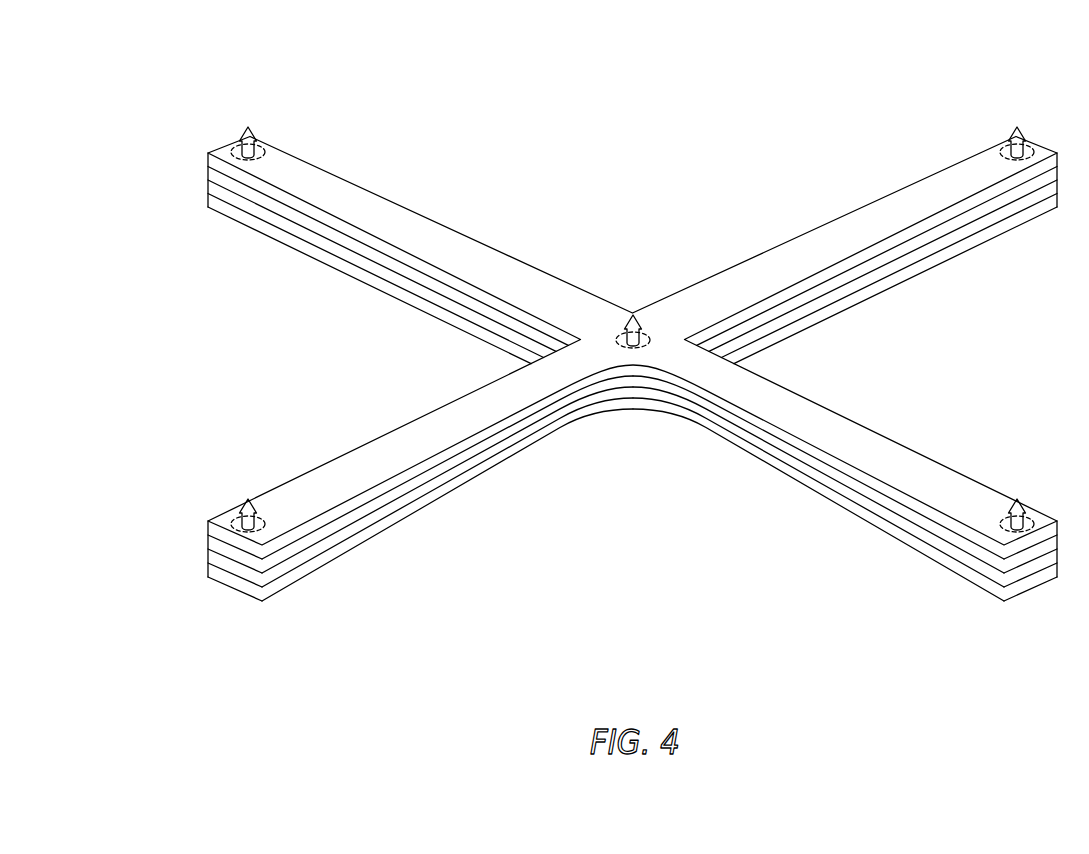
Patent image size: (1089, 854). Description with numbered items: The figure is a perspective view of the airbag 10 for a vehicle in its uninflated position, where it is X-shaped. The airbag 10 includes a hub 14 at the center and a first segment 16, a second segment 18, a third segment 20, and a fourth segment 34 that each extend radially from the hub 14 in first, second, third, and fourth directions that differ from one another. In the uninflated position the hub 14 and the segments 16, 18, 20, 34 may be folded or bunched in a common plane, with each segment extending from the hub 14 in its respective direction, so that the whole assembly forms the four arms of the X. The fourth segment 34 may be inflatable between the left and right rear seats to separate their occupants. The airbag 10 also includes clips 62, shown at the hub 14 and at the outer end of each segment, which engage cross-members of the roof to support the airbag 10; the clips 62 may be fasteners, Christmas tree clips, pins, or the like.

The airbag 10 is at (635, 311).
The hub 14 is at (657, 335).
The first segment 16 is at (320, 482).
The second segment 18 is at (932, 482).
The third segment 20 is at (322, 187).
The fourth segment 34 is at (942, 188).
The clips 62 is at (248, 127).